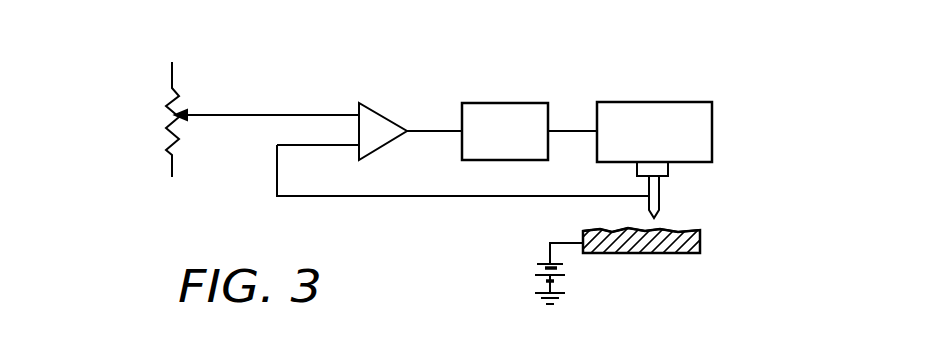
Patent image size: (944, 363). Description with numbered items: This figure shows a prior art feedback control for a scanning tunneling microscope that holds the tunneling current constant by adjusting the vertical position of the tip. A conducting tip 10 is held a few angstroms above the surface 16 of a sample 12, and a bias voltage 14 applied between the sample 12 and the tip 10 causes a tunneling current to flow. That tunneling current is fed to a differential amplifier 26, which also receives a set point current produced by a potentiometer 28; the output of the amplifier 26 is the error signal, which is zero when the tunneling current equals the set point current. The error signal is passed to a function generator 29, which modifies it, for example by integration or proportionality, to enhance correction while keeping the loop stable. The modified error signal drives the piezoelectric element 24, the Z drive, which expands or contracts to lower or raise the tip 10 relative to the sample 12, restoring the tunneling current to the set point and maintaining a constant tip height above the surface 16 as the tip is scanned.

The potentiometer 28 is at (172, 104).
The differential amplifier 26 is at (417, 97).
The function generator 29 is at (503, 103).
The piezoelectric element 24 is at (712, 130).
The conducting tip 10 is at (660, 193).
The surface 16 is at (689, 229).
The sample 12 is at (700, 244).
The bias voltage 14 is at (536, 266).